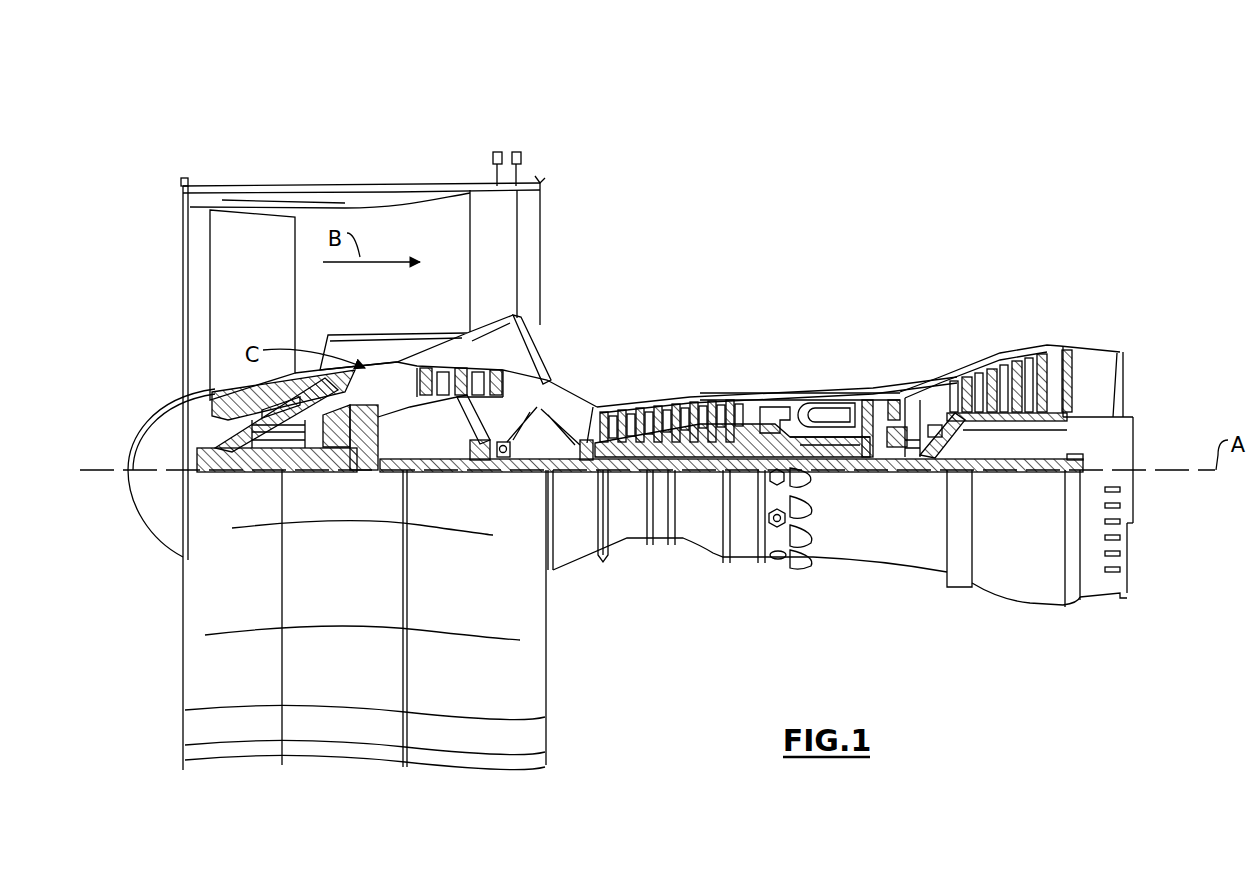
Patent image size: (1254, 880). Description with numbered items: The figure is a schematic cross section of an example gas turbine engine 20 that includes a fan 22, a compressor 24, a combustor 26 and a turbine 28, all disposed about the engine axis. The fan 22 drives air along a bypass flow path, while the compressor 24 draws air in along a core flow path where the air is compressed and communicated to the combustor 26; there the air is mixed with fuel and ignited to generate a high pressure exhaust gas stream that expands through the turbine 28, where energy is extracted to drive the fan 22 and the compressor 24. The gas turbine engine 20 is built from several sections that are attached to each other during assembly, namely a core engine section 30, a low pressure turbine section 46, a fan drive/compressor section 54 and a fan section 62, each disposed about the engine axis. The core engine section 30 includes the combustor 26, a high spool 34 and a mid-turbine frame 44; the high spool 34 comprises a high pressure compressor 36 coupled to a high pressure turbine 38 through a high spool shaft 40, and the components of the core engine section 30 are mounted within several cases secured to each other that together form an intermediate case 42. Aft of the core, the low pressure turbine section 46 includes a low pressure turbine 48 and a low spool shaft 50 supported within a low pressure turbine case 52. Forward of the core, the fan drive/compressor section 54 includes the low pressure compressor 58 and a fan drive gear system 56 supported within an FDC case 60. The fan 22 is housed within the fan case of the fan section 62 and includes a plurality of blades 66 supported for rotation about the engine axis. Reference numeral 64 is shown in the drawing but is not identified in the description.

The gas turbine engine 20 is at (824, 237).
The fan 22 is at (185, 362).
The compressor 24 is at (403, 306).
The combustor 26 is at (828, 413).
The turbine 28 is at (1077, 308).
The core engine section 30 is at (563, 660).
The high spool 34 is at (787, 447).
The high pressure compressor 36 is at (748, 435).
The high pressure turbine 38 is at (887, 423).
The high spool shaft 40 is at (826, 468).
The intermediate case 42 is at (852, 543).
The mid-turbine frame 44 is at (925, 405).
The low pressure turbine section 46 is at (947, 660).
The low pressure turbine 48 is at (1077, 420).
The low spool shaft 50 is at (710, 475).
The low pressure turbine case 52 is at (1032, 583).
The fan drive/compressor (FDC) section 54 is at (187, 660).
The fan drive gear system 56 is at (368, 465).
The low pressure compressor 58 is at (545, 327).
The FDC case 60 is at (356, 330).
The fan section 62 is at (180, 798).
The fan nacelle 64 is at (325, 730).
The blades 66 is at (266, 314).